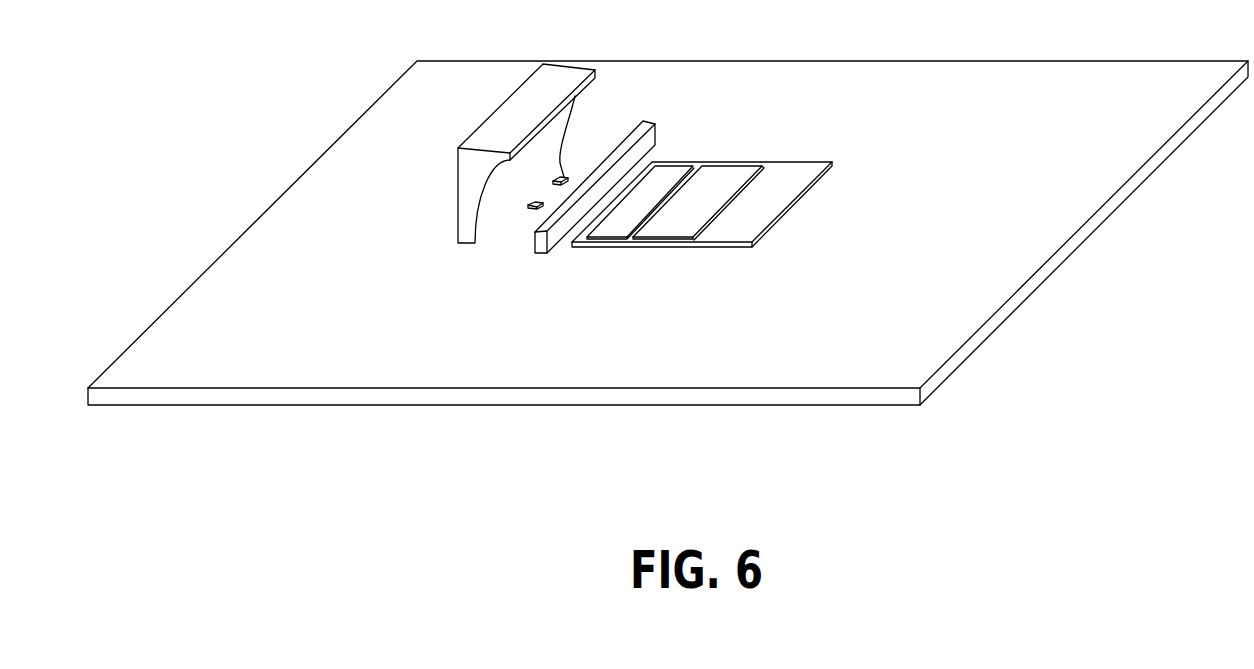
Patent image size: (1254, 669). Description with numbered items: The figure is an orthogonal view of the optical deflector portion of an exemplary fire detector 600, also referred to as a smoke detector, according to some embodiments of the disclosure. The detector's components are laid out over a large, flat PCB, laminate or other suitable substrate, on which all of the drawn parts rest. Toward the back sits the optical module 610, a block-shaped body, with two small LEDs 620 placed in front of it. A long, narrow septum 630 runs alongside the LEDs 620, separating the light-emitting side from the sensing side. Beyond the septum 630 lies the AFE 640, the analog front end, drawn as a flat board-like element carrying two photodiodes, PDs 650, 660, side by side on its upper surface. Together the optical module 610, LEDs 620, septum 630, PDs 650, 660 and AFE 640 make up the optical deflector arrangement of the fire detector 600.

The fire detector 600 is at (590, 423).
The optical module 610 is at (587, 47).
The LEDs 620 is at (566, 177).
The septum 630 is at (657, 133).
The AFE 640 is at (808, 140).
The PD 650 is at (602, 236).
The PD 660 is at (675, 236).